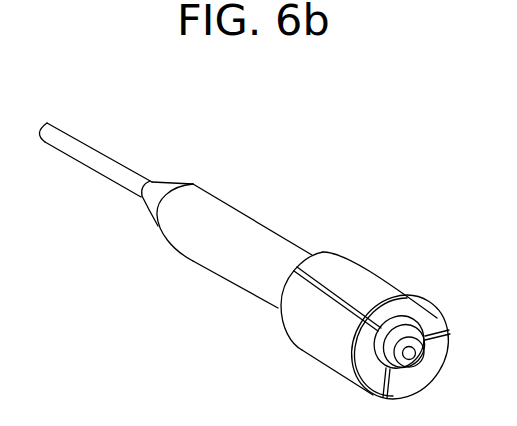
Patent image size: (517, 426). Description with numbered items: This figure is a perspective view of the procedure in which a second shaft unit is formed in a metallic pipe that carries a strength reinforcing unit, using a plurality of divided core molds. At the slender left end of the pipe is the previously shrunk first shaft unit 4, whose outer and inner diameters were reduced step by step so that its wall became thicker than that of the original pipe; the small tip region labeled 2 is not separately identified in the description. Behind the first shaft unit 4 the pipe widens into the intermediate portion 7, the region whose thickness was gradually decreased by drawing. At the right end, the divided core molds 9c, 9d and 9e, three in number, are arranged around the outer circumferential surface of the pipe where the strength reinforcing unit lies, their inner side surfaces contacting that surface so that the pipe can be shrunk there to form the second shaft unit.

The probe tip 2 is at (47, 123).
The first shaft unit 4 is at (71, 157).
The intermediate portion 7 is at (199, 262).
The divided core mold 9c is at (386, 281).
The divided core mold 9d is at (304, 347).
The divided core mold 9e is at (438, 362).